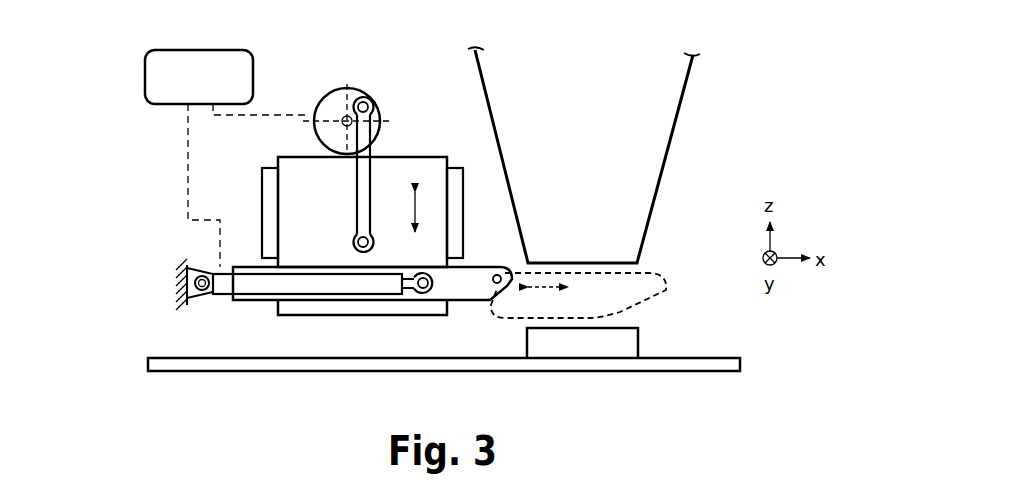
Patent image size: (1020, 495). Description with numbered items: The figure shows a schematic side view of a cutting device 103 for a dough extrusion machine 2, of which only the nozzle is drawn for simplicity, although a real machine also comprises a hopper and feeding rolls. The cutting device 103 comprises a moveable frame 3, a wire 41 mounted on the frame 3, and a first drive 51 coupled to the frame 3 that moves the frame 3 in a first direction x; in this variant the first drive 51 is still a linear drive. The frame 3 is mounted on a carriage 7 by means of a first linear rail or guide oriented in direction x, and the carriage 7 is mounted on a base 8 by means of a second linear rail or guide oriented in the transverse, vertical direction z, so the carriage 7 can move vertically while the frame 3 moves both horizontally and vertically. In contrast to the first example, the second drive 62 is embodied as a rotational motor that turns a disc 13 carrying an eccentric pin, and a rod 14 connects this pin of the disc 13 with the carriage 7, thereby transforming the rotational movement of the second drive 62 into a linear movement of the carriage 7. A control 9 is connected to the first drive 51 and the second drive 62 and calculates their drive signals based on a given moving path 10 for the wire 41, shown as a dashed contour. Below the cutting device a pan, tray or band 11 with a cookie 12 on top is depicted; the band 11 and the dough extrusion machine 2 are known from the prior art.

The dough extrusion machine 2 is at (702, 130).
The moveable frame 3 is at (480, 290).
The carriage 7 is at (323, 168).
The base 8 is at (453, 202).
The control 9 is at (163, 70).
The moving path 10 is at (652, 297).
The band 11 is at (687, 365).
The cookie 12 is at (568, 347).
The disc 13 is at (346, 119).
The rod 14 is at (367, 152).
The wire 41 is at (500, 277).
The first drive 51 is at (267, 285).
The second drive 62 is at (333, 102).
The cutting device 103 is at (137, 173).